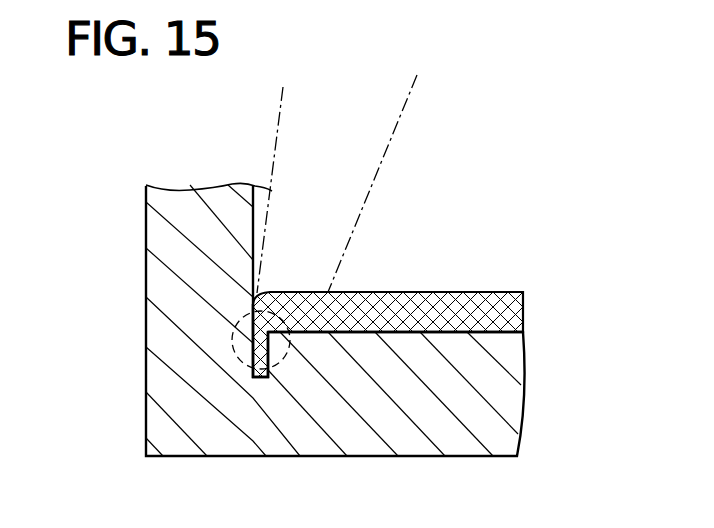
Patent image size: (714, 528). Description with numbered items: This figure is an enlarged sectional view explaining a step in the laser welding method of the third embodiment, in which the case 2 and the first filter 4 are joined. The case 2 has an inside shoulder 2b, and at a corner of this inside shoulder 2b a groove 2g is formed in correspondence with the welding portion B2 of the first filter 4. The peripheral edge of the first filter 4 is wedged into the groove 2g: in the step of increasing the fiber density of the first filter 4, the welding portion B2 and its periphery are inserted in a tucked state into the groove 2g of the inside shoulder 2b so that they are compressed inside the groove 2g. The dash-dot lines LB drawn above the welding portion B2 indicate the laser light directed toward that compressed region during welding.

The case 2 is at (510, 404).
The inside shoulder 2b is at (510, 323).
The groove 2g is at (276, 372).
The first filter 4 is at (388, 291).
The welding portion B2 is at (232, 344).
The laser beam LB is at (392, 136).